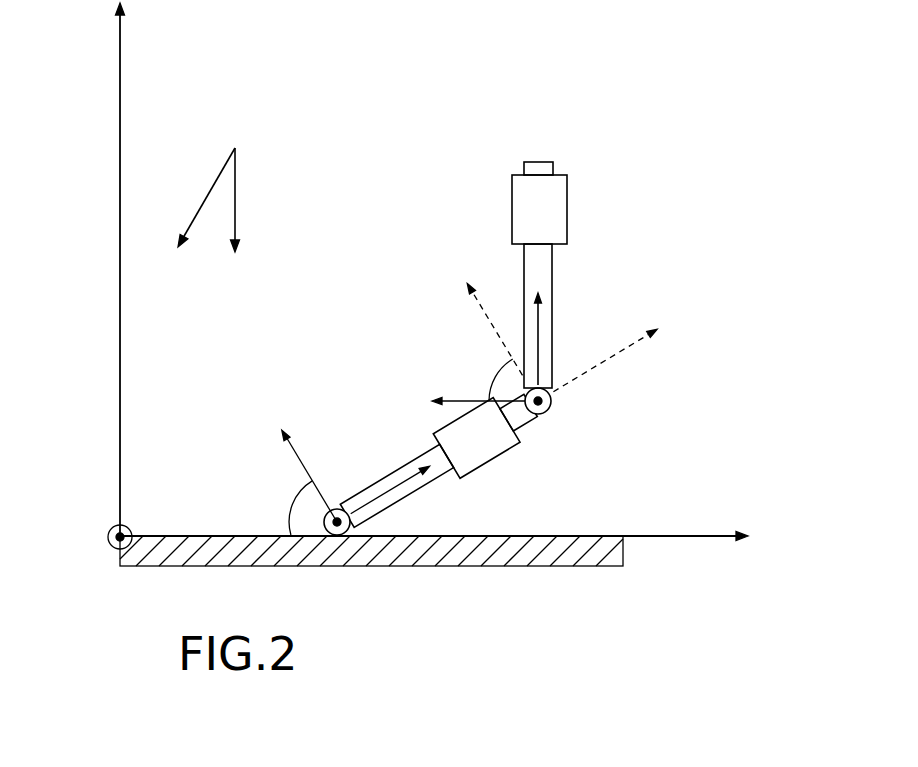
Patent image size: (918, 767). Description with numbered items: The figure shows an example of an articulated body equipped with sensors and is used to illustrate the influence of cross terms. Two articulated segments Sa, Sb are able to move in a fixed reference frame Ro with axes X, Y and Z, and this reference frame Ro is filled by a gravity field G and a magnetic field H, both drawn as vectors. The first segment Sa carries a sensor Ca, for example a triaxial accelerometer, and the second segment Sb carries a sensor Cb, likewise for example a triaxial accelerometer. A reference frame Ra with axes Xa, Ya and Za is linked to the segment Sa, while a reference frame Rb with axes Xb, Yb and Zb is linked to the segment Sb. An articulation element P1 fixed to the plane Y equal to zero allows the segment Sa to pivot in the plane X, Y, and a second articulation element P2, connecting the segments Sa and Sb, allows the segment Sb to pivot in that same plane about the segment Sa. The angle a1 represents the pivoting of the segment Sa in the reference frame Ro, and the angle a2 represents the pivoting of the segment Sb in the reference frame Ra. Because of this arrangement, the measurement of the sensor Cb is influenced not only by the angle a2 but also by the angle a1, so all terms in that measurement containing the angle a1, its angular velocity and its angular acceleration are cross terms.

The reference frame Ro is at (412, 284).
The reference frame Ra is at (349, 467).
The reference frame Rb is at (553, 336).
The articulated segment Sa is at (380, 487).
The articulated segment Sb is at (532, 266).
The sensor Ca is at (480, 448).
The sensor Cb is at (555, 188).
The articulation element P1 is at (352, 528).
The articulation element P2 is at (552, 407).
The angle a1 is at (290, 508).
The angle a2 is at (493, 379).
The magnetic field H is at (195, 168).
The gravity field G is at (282, 168).